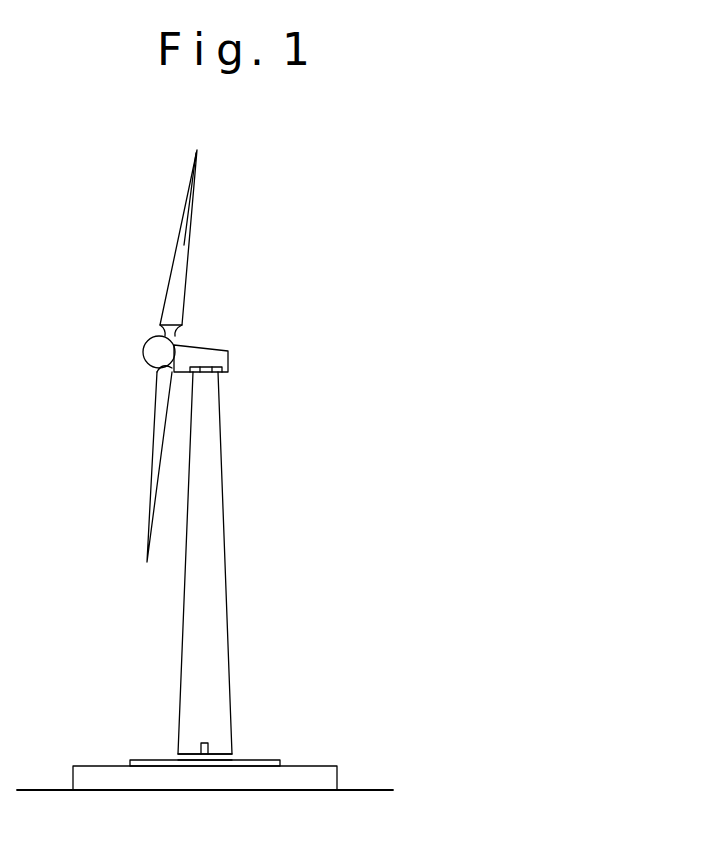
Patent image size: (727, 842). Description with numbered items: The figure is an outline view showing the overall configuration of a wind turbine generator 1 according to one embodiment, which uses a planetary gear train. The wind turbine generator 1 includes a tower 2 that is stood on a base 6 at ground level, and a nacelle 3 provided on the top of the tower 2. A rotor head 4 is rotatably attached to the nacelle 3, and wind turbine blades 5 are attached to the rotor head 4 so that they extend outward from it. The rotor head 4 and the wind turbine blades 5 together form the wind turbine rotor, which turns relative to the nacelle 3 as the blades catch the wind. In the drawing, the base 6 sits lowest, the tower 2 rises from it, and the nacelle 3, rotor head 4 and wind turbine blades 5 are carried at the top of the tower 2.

The wind turbine generator 1 is at (354, 300).
The tower 2 is at (224, 515).
The nacelle 3 is at (210, 343).
The rotor head 4 is at (144, 349).
The wind turbine blades 5 is at (177, 232).
The base 6 is at (305, 772).